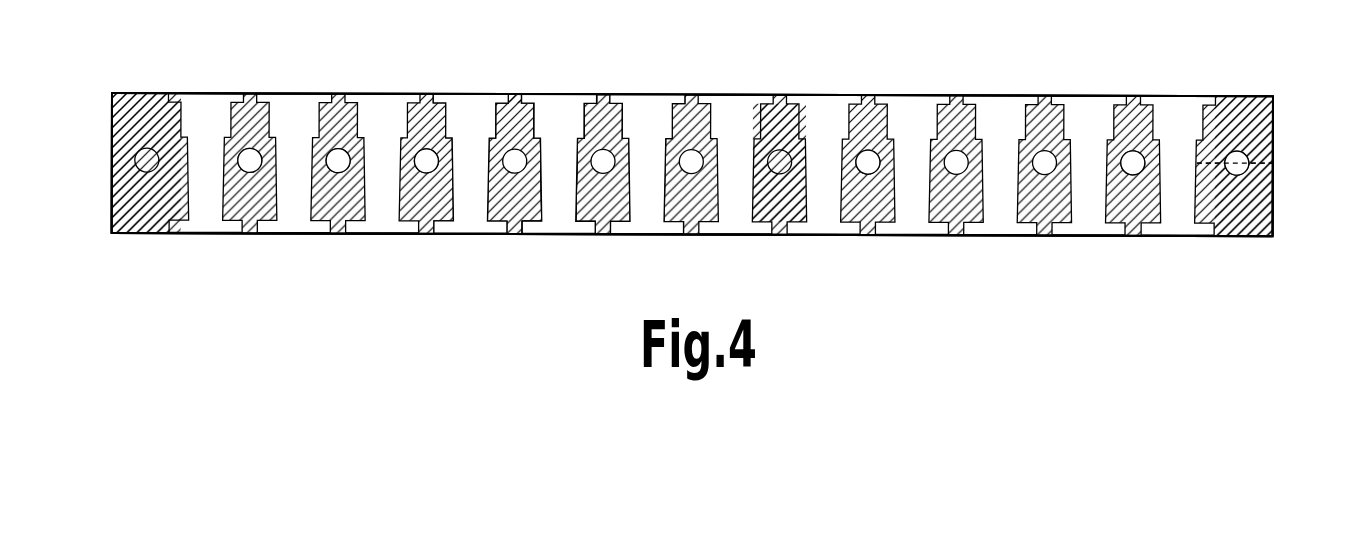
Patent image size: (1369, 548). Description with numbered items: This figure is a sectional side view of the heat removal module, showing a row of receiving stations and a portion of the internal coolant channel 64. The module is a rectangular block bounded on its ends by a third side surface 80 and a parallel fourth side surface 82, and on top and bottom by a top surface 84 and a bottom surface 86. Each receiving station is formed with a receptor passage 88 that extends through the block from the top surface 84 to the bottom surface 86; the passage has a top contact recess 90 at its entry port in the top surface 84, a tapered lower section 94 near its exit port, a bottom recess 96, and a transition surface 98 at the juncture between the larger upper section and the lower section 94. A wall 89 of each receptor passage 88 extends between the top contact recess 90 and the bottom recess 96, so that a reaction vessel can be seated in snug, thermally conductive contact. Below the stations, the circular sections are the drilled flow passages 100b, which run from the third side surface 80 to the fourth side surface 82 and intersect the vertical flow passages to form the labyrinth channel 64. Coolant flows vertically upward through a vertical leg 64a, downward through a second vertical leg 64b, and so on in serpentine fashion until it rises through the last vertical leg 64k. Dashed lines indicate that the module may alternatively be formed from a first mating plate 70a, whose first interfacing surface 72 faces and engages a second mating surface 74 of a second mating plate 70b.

The channel 64 is at (436, 153).
The vertical leg of the channel 64a is at (243, 170).
The second vertical leg of the channel 64b is at (333, 172).
The last vertical leg of the channel 64k is at (1142, 158).
The first mating plate 70a is at (1275, 97).
The second mating plate 70b is at (1247, 236).
The first interfacing surface 72 is at (1250, 166).
The second mating surface 74 is at (1212, 152).
The third side surface 80 is at (1283, 127).
The fourth side surface 82 is at (112, 109).
The top surface 84 is at (423, 101).
The bottom surface 86 is at (433, 233).
The receptor passage 88 is at (625, 120).
The wall 89 is at (757, 185).
The top contact recess 90 is at (521, 100).
The lower section 94 is at (456, 195).
The bottom recess 96 is at (600, 221).
The transition surface 98 is at (559, 137).
The flow passages 100b is at (877, 168).